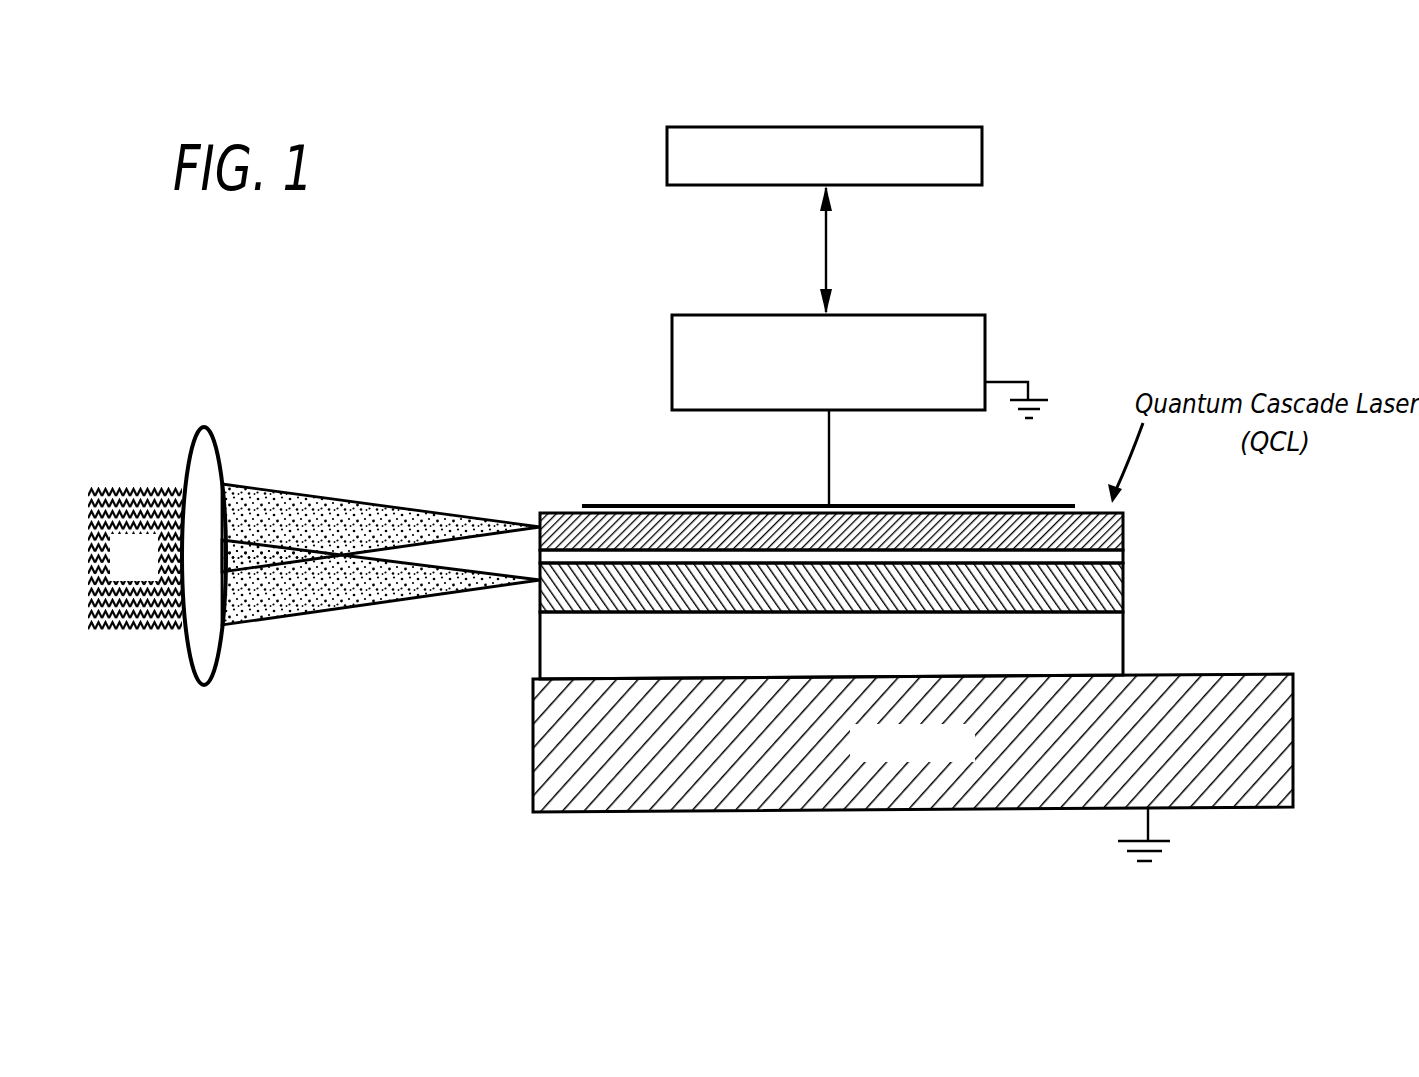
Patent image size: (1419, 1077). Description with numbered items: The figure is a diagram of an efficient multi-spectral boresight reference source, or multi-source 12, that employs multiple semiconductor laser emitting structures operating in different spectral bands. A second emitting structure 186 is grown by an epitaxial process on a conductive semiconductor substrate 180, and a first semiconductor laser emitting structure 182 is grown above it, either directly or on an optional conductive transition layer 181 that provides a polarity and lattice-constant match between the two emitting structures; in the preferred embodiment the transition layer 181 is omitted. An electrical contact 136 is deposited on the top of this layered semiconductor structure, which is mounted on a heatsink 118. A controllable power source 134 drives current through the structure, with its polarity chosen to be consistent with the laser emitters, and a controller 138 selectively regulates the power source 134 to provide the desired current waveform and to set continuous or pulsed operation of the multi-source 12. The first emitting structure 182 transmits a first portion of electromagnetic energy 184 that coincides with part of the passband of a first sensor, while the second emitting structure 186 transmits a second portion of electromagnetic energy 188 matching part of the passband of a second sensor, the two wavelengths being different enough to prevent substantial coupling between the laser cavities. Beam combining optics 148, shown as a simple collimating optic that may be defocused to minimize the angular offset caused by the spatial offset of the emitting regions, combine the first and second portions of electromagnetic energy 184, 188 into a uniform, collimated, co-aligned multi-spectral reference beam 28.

The multi-spectral boresight reference source 12 is at (1212, 254).
The multi-spectral reference beam 28 is at (149, 573).
The heatsink 118 is at (1293, 723).
The controllable power source 134 is at (957, 315).
The electrical contact 136 is at (668, 506).
The controller 138 is at (982, 145).
The beam combining optics 148 is at (208, 685).
The conductive semiconductor substrate 180 is at (540, 644).
The conductive transition layer 181 is at (1123, 548).
The first semiconductor laser emitting structure 182 is at (1123, 523).
The first portion of electromagnetic energy 184 is at (424, 509).
The second emitting structure 186 is at (1123, 580).
The second portion of electromagnetic energy 188 is at (405, 599).